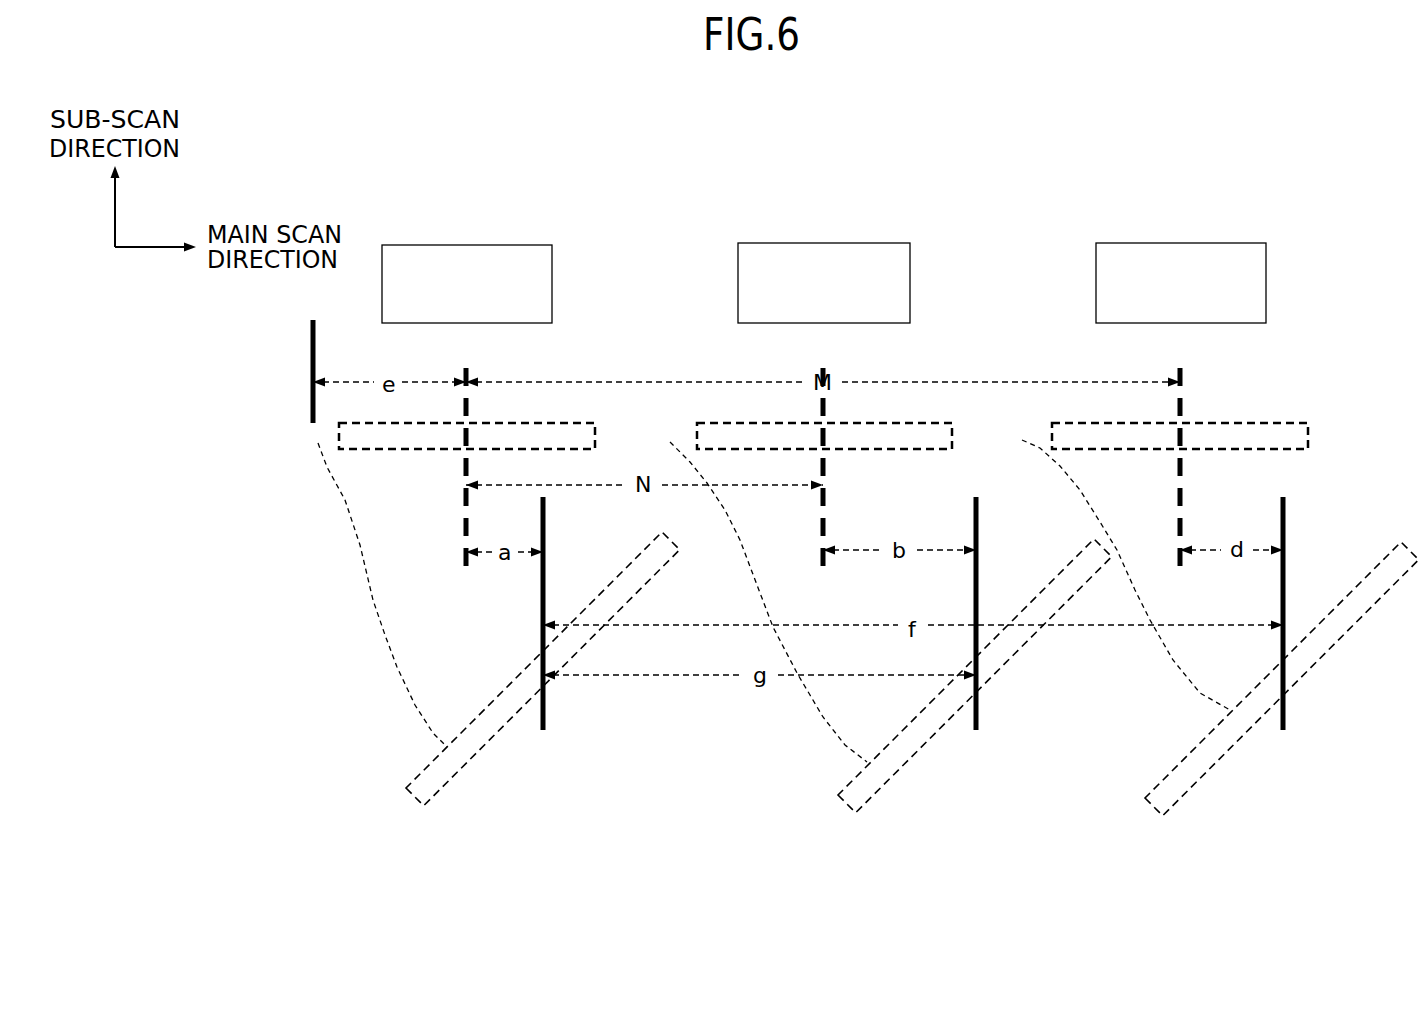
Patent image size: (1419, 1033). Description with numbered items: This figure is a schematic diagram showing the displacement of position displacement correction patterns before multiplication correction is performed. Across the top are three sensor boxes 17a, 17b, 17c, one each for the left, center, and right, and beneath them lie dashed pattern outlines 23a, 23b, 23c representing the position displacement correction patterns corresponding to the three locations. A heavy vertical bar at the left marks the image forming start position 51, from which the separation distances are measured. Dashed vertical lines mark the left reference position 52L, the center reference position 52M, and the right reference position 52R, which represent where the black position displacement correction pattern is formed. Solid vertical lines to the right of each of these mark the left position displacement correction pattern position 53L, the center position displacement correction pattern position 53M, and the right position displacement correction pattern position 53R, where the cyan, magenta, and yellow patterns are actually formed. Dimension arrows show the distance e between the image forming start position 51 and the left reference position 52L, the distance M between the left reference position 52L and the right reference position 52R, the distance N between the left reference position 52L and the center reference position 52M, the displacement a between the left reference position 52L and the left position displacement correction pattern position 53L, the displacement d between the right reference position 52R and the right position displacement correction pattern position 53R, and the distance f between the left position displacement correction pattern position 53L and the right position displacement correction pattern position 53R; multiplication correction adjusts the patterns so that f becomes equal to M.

The TM sensor (left) 17a is at (464, 243).
The TM sensor (center) 17b is at (821, 243).
The TM sensor (right) 17c is at (1178, 243).
The image forming start position 51 is at (312, 329).
The left toner mark 23a is at (339, 436).
The center toner mark 23b is at (697, 436).
The right toner mark 23c is at (1052, 436).
The left reference position 52L is at (466, 520).
The center reference position 52M is at (823, 522).
The right reference position 52R is at (1180, 480).
The left position displacement correction pattern position 53L is at (545, 706).
The center position displacement correction pattern position 53M is at (978, 706).
The right position displacement correction pattern position 53R is at (1285, 706).